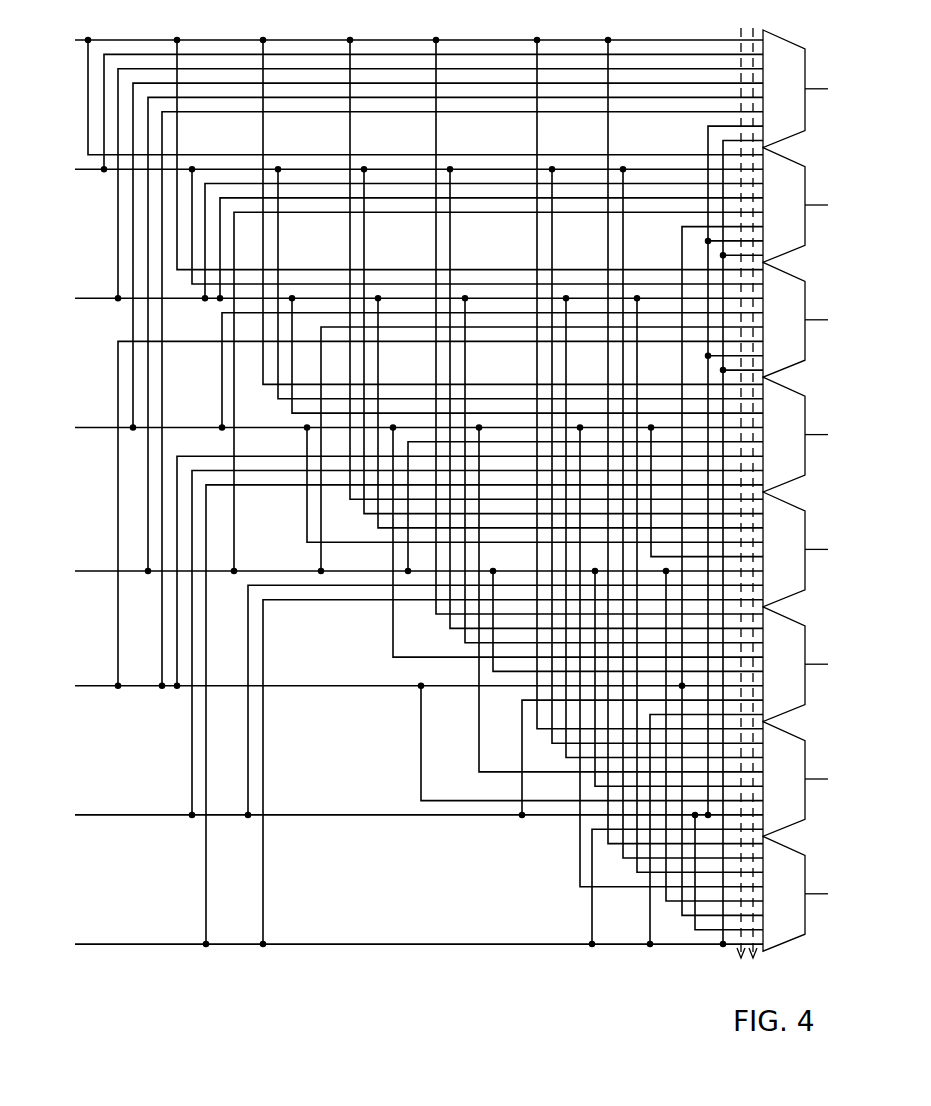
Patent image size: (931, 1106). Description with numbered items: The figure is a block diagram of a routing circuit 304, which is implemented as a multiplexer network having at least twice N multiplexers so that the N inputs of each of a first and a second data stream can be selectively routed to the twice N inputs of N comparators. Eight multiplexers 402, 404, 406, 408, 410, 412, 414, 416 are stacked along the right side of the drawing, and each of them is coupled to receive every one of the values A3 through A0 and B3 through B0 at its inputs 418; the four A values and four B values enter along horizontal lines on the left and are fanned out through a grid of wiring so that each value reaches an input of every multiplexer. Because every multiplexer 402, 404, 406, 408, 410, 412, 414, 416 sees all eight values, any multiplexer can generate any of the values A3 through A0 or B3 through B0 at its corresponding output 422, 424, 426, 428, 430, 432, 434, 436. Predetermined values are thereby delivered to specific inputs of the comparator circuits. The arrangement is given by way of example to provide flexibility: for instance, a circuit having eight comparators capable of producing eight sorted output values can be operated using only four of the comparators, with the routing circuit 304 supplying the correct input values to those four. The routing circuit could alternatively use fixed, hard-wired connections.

The routing circuit 304 is at (118, 975).
The multiplexer 402 is at (795, 36).
The multiplexer 404 is at (792, 146).
The multiplexer 406 is at (792, 261).
The multiplexer 408 is at (792, 376).
The multiplexer 410 is at (792, 491).
The multiplexer 412 is at (792, 606).
The multiplexer 414 is at (792, 721).
The multiplexer 416 is at (792, 835).
The inputs 418 is at (746, 34).
The output 422 is at (808, 89).
The output 424 is at (808, 205).
The output 426 is at (808, 320).
The output 428 is at (808, 435).
The output 430 is at (808, 549).
The output 432 is at (808, 664).
The output 434 is at (808, 779).
The output 436 is at (808, 894).